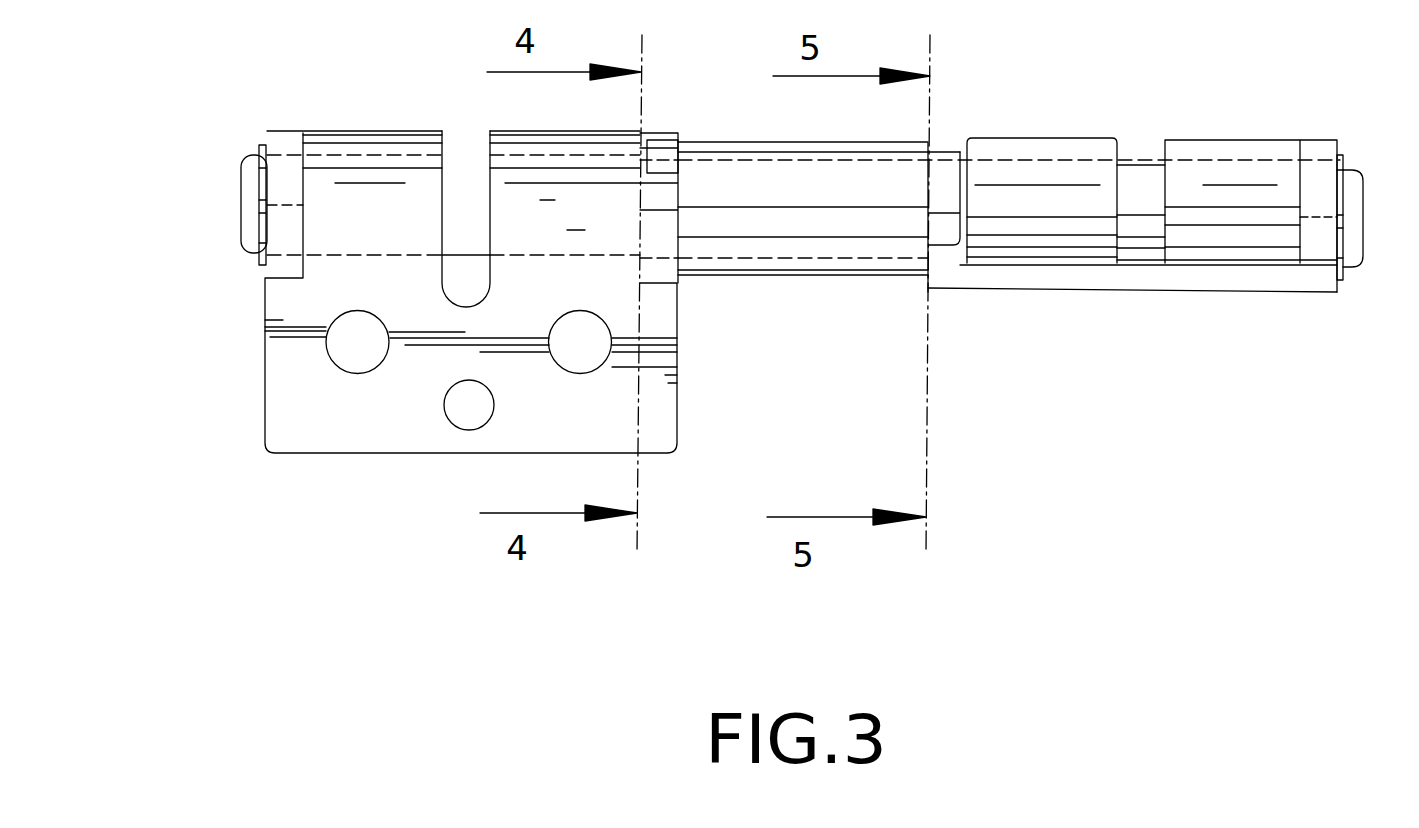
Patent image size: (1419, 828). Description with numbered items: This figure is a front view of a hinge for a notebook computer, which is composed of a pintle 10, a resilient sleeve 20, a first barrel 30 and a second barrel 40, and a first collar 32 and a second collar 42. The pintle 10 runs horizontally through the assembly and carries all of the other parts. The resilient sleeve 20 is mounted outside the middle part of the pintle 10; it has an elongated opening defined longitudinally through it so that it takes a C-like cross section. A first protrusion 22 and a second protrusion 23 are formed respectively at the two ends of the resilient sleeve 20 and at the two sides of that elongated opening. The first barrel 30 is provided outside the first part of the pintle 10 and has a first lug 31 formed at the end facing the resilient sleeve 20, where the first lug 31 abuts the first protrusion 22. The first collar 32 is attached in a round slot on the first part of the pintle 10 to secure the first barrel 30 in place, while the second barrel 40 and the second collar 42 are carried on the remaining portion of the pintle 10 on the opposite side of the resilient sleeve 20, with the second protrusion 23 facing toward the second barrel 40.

The pintle 10 is at (226, 238).
The resilient sleeve 20 is at (780, 110).
The first protrusion 22 is at (660, 148).
The second protrusion 23 is at (947, 246).
The first barrel 30 is at (382, 477).
The first lug 31 is at (652, 197).
The first collar 32 is at (262, 147).
The second barrel 40 is at (1260, 312).
The second collar 42 is at (1343, 160).